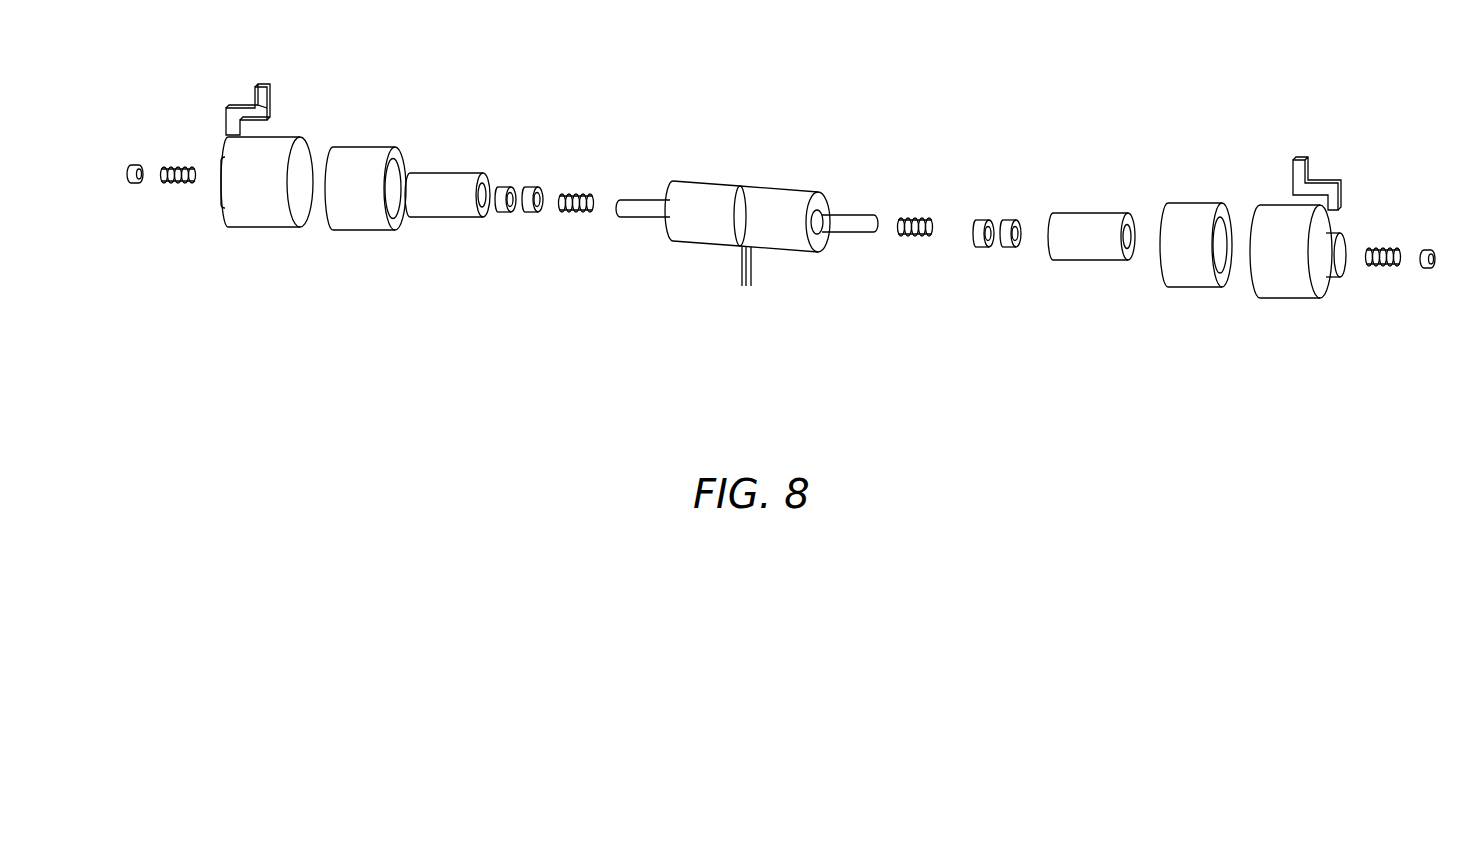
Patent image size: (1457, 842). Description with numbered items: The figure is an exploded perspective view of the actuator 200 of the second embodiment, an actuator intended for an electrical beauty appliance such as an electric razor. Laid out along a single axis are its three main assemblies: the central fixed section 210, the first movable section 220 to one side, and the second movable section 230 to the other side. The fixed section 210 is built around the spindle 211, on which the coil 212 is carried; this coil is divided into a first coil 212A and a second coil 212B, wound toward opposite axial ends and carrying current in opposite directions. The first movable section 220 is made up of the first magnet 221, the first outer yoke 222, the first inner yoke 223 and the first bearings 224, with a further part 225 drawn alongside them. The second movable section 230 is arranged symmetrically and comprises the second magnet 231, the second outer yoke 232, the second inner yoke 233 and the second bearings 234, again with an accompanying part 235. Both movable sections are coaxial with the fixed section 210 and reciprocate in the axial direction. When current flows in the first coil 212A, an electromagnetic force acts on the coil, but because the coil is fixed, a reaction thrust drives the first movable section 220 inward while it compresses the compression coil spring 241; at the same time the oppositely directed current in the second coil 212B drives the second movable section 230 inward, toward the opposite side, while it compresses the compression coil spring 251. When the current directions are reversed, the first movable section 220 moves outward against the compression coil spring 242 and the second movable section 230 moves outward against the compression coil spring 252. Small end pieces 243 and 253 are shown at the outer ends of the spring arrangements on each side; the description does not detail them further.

The actuator 200 is at (913, 100).
The fixed section 210 is at (633, 348).
The spindle 211 is at (848, 228).
The coil 212 is at (726, 263).
The first coil 212A is at (787, 230).
The second coil 212B is at (713, 228).
The first movable section 220 is at (1338, 348).
The first magnet 221 is at (1193, 280).
The first outer yoke 222 is at (1296, 280).
The first inner yoke 223 is at (1093, 253).
The first bearings 224 is at (986, 248).
The bracket 225 is at (1308, 180).
The second movable section 230 is at (192, 348).
The second magnet 231 is at (372, 217).
The second outer yoke 232 is at (262, 206).
The second inner yoke 233 is at (455, 208).
The second bearings 234 is at (531, 213).
The bracket 235 is at (268, 105).
The compression coil spring 241 is at (922, 216).
The compression coil spring 242 is at (1384, 246).
The cap 243 is at (1424, 272).
The compression coil spring 251 is at (578, 190).
The compression coil spring 252 is at (176, 163).
The cap 253 is at (142, 163).